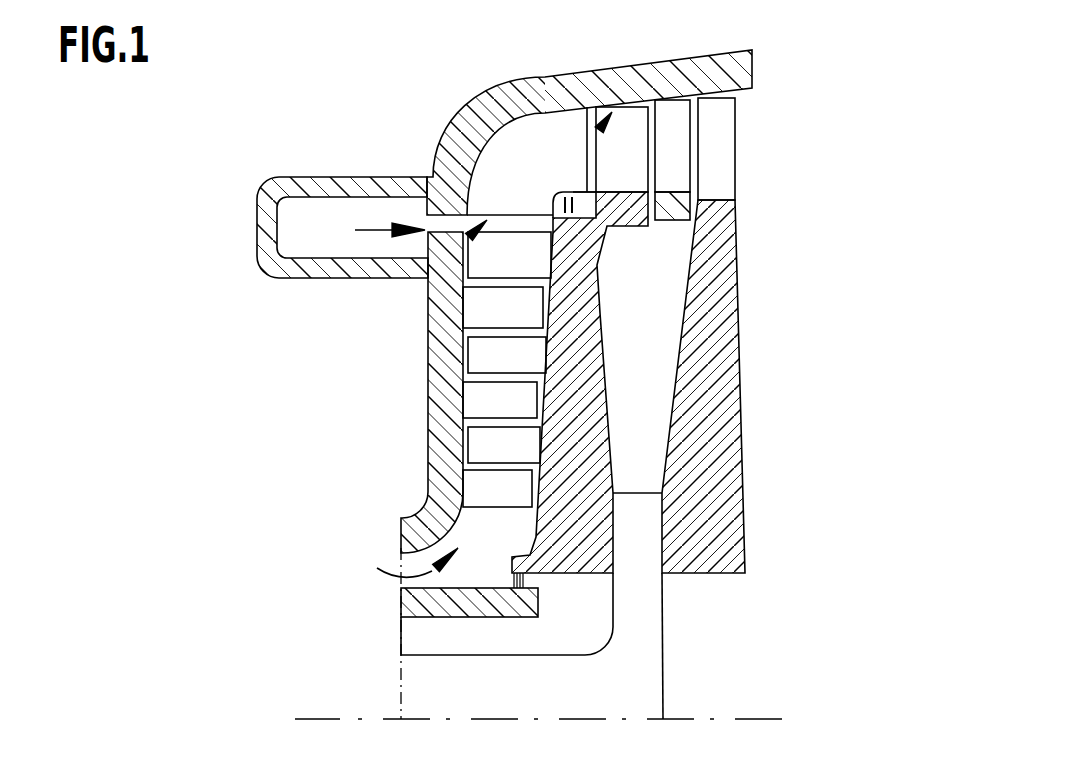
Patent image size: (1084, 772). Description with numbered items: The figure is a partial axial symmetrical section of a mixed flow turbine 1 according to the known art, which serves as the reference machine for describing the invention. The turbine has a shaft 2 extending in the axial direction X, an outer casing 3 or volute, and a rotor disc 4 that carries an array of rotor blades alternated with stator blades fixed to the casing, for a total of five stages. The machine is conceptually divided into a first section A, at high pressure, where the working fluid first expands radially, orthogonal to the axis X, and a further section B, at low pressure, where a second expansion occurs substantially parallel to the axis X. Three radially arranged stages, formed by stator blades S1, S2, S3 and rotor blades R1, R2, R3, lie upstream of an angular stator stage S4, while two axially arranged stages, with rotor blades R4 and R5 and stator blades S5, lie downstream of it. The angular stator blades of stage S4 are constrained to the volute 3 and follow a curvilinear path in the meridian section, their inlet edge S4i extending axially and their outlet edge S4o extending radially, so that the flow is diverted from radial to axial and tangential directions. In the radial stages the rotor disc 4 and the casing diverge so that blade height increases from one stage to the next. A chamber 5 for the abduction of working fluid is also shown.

The mixed flow turbine 1 is at (864, 167).
The shaft 2 is at (435, 690).
The outer casing 3 is at (480, 123).
The rotor disc 4 is at (583, 328).
The chamber 5 is at (300, 217).
The rotor blades of first stage R1 is at (503, 447).
The rotor blades of second stage R2 is at (498, 353).
The rotor blades of third stage R3 is at (505, 258).
The rotor blades of fourth stage R4 is at (623, 143).
The rotor blades of fifth stage R5 is at (715, 123).
The stator blades of first stage S1 is at (500, 490).
The stator blades of second stage S2 is at (500, 402).
The stator blades of third stage S3 is at (497, 307).
The angular stator stage S4 is at (544, 183).
The inlet edge of angular stator blades S4i is at (469, 237).
The outlet edge of angular stator blades S4o is at (611, 118).
The stator blades of fifth stage S5 is at (673, 132).
The first section A is at (305, 433).
The further section B is at (505, 40).
The axial direction X is at (745, 720).